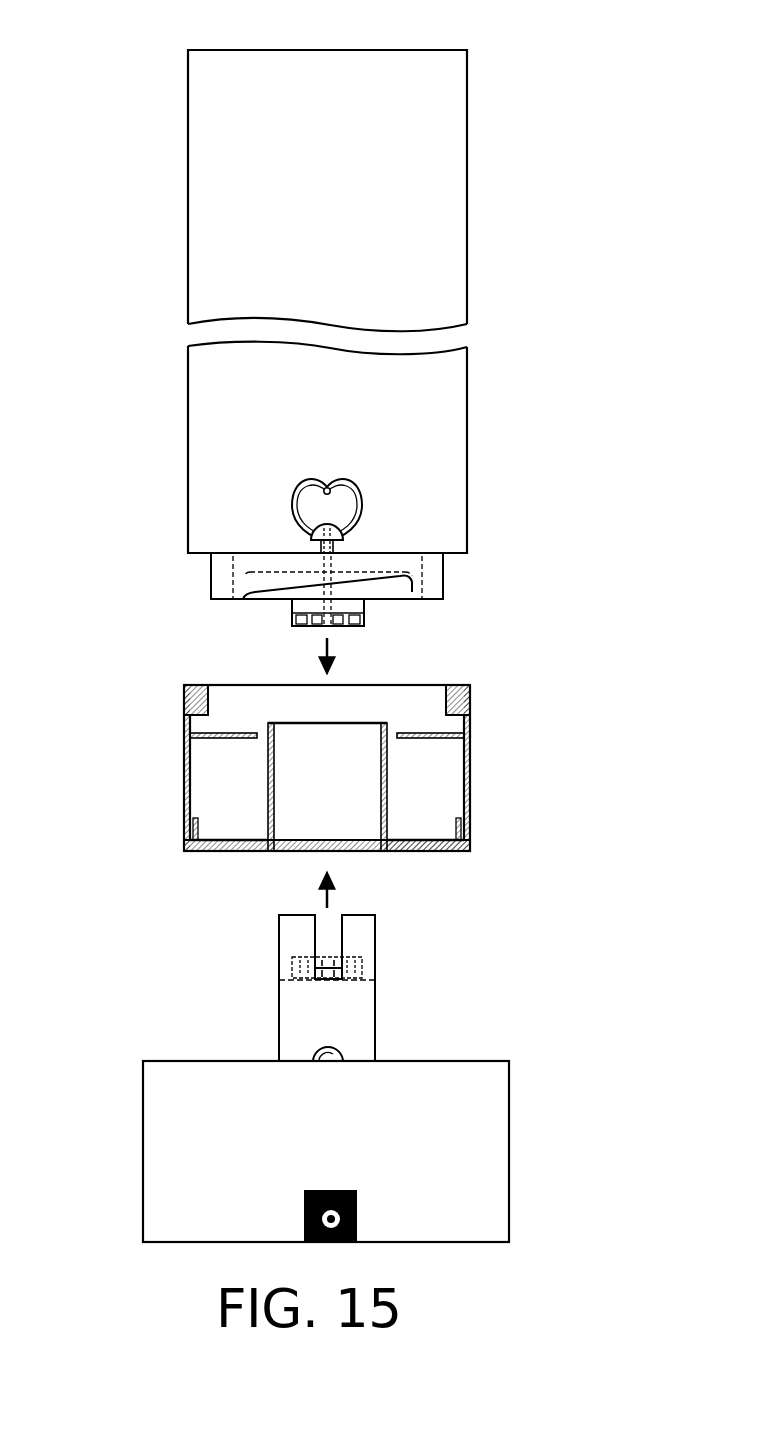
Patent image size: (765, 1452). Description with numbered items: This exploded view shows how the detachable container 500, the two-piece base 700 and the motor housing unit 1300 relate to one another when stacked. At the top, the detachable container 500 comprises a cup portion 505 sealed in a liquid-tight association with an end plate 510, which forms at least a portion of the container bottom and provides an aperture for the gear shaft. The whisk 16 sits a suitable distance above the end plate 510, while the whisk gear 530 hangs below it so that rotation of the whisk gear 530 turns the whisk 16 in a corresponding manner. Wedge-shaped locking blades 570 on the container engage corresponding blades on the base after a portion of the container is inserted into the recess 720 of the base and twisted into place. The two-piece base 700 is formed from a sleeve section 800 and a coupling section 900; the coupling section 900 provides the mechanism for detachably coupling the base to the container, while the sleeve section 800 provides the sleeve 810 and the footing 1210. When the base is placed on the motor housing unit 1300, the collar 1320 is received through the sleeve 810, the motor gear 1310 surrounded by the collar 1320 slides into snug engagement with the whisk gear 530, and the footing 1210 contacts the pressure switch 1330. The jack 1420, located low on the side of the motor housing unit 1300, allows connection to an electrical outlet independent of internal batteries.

The detachable container 500 is at (245, 31).
The cup portion 505 is at (467, 426).
The whisk 16 is at (350, 481).
The end plate 510 is at (258, 558).
The locking blades 570 is at (270, 600).
The whisk gear 530 is at (365, 616).
The two-piece base 700 is at (313, 783).
The coupling section 900 is at (176, 735).
The recess 720 is at (445, 728).
The sleeve section 800 is at (176, 841).
The sleeve 810 is at (277, 802).
The footing 1210 is at (403, 851).
The motor housing unit 1300 is at (328, 1078).
The collar 1320 is at (378, 930).
The motor gear 1310 is at (362, 968).
The pressure switch 1330 is at (330, 1048).
The jack 1420 is at (357, 1210).